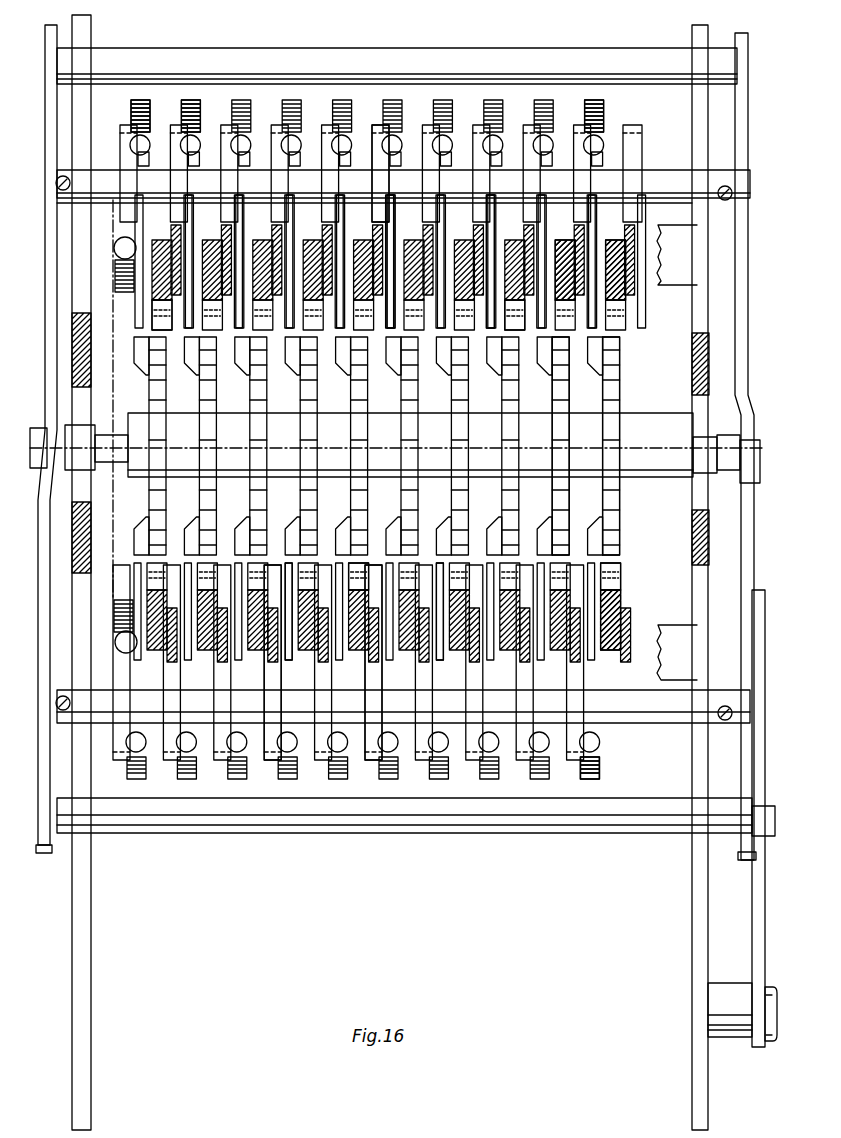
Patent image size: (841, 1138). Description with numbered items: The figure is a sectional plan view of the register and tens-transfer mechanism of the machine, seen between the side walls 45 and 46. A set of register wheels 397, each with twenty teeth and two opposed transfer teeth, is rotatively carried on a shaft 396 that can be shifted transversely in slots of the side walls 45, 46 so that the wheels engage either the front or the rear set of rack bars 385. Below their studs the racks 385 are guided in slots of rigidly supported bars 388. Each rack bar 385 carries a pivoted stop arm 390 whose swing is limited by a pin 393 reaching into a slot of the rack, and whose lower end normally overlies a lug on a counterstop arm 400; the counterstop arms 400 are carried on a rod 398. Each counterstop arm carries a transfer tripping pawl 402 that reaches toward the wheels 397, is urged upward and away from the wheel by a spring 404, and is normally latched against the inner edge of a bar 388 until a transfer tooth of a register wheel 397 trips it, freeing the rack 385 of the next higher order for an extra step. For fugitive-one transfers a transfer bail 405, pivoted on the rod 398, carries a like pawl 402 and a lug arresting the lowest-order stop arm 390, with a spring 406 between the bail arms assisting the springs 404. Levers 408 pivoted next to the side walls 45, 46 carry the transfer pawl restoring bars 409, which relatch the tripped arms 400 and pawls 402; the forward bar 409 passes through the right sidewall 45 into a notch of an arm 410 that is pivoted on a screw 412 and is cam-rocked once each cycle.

The right sidewall 45 is at (692, 938).
The side wall 46 is at (91, 919).
The rack bar 385 is at (488, 346).
The bar 388 is at (673, 280).
The stop arm 390 is at (576, 296).
The pin 393 is at (156, 250).
The shaft 396 is at (672, 474).
The register wheel 397 is at (561, 392).
The rod 398 is at (655, 180).
The counterstop arm 400 is at (383, 130).
The transfer tripping pawl 402 is at (390, 346).
The spring 404 is at (182, 121).
The transfer bail 405 is at (628, 135).
The spring 406 is at (126, 598).
The lever 408 is at (57, 36).
The transfer pawl restoring bar 409 is at (276, 50).
The arm 410 is at (766, 850).
The screw 412 is at (771, 1040).